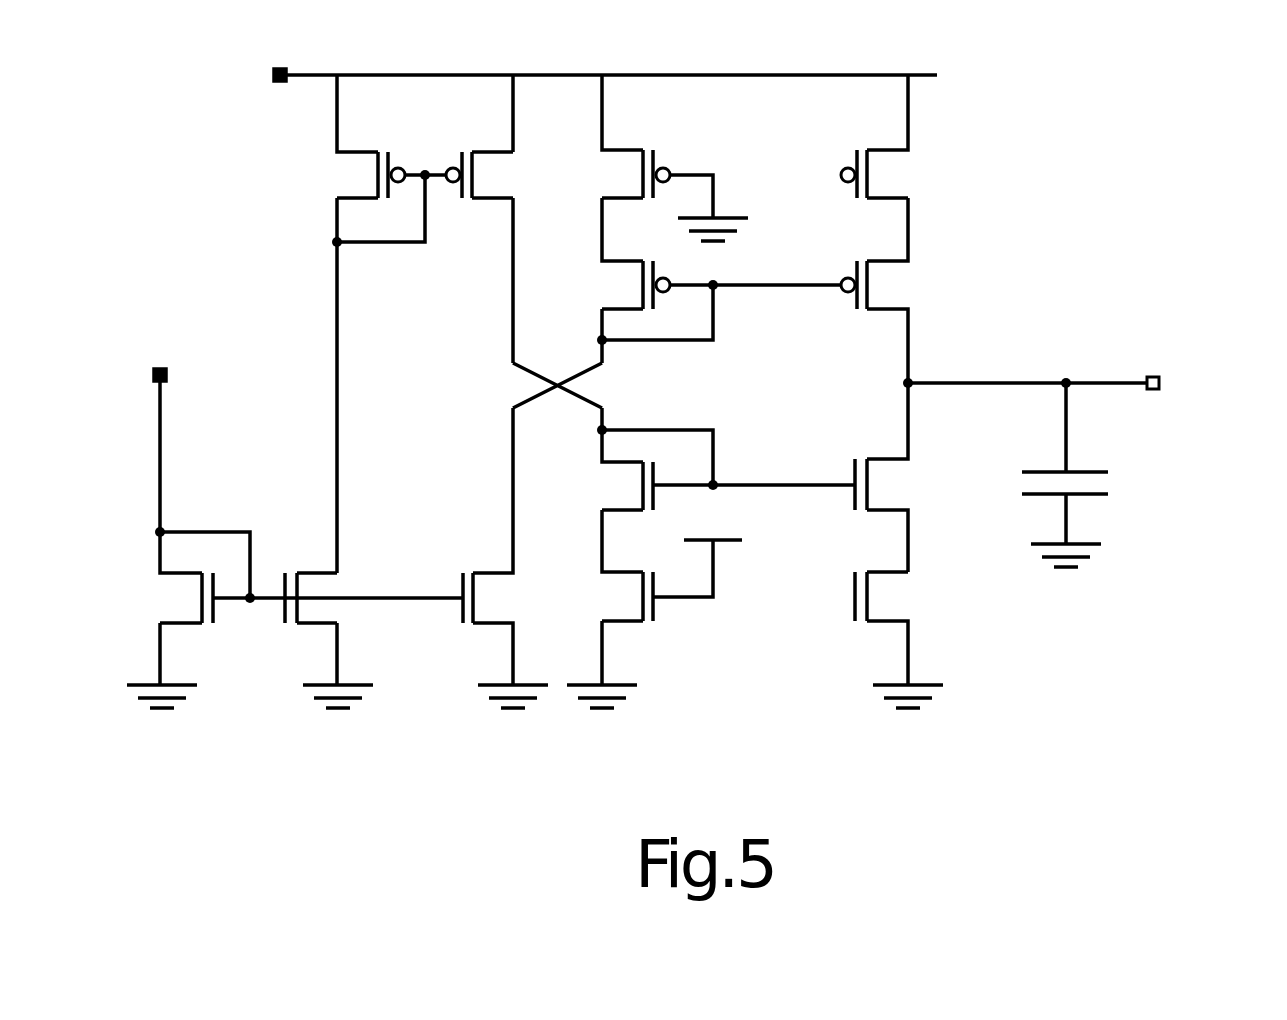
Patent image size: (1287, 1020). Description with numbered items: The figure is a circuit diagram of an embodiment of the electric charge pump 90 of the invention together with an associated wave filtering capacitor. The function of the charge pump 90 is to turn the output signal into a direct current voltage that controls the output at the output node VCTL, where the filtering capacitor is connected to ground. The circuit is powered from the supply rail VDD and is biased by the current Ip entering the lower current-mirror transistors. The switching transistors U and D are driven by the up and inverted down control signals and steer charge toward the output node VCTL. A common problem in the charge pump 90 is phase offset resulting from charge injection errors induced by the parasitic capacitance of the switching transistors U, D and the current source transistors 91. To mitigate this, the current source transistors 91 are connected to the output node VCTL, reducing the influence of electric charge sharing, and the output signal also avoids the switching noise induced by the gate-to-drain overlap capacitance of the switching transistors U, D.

The charge pump 90 is at (703, 393).
The current source transistors 91 is at (850, 385).
The switching transistor U is at (841, 175).
The switching transistor D is at (855, 597).
The pump current source Ip is at (182, 397).
The supply rail VDD is at (558, 74).
The output node VCTL is at (1091, 462).